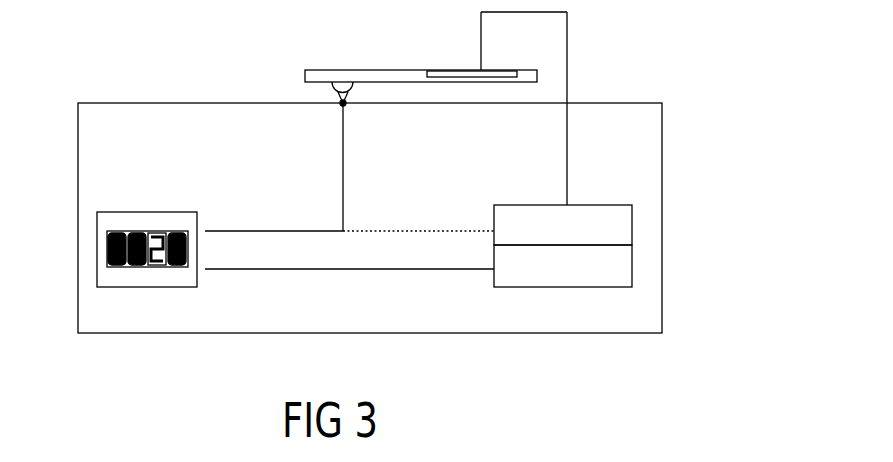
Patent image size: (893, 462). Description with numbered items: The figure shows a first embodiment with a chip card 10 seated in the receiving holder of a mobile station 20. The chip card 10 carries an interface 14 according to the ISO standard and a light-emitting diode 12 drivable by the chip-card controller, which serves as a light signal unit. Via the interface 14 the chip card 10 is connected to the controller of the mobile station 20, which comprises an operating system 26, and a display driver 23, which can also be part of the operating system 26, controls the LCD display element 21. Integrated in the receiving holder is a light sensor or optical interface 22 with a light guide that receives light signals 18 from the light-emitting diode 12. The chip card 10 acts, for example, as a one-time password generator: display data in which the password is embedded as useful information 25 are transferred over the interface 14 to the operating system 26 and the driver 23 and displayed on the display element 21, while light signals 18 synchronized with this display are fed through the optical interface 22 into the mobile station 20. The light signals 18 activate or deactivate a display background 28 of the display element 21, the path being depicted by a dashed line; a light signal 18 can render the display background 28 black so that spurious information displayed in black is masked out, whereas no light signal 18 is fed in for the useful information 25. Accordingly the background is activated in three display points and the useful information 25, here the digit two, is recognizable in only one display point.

The chip card 10 is at (378, 78).
The light-emitting diode 12 is at (336, 92).
The interface 14 is at (484, 74).
The light signals 18 is at (349, 101).
The mobile station 20 is at (370, 218).
The LCD display element 21 is at (97, 286).
The optical interface 22 is at (345, 106).
The display driver 23 is at (563, 266).
The useful information 25 is at (157, 268).
The operating system 26 is at (563, 225).
The display background 28 is at (107, 240).